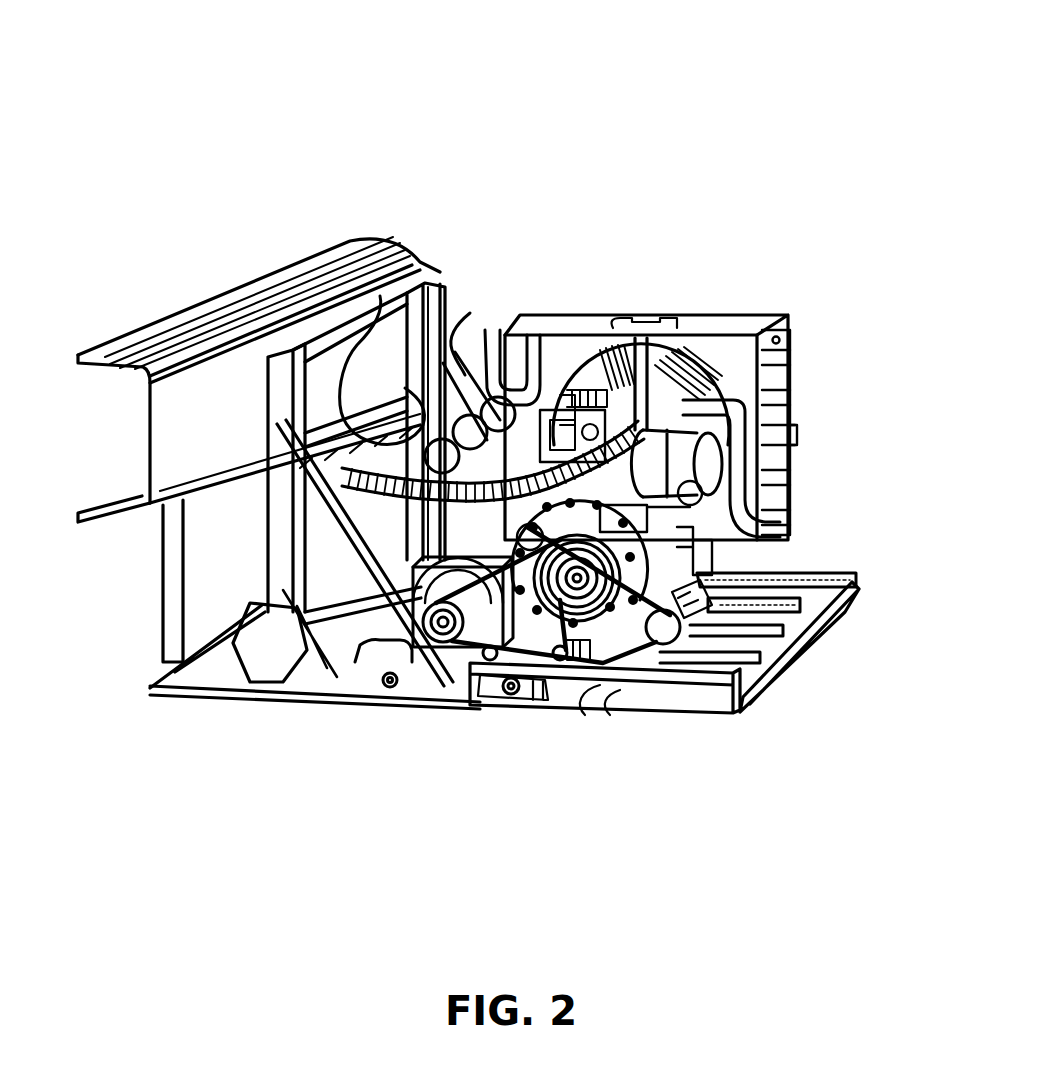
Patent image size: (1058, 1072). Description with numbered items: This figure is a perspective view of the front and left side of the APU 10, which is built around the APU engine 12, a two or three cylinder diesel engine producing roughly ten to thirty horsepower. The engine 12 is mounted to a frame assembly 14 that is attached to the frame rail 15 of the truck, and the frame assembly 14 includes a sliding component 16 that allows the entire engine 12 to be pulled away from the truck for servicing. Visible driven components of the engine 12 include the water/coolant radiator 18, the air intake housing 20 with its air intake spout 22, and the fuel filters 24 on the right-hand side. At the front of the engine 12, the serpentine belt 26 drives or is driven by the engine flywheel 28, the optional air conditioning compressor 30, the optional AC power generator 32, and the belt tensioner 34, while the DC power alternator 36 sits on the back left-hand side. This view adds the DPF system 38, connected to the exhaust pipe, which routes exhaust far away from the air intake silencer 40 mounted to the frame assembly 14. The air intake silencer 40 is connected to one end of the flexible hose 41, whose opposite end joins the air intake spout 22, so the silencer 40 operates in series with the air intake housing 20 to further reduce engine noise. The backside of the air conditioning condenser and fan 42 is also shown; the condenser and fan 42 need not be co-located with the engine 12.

The APU 10 is at (495, 172).
The APU engine 12 is at (652, 320).
The frame assembly 14 is at (440, 282).
The frame rail 15 is at (280, 278).
The sliding component 16 is at (822, 630).
The water/coolant radiator 18 is at (792, 316).
The air intake housing 20 is at (798, 436).
The air intake spout 22 is at (695, 398).
The fuel filters 24 is at (855, 580).
The serpentine belt 26 is at (640, 673).
The engine flywheel 28 is at (563, 705).
The air conditioning compressor 30 is at (733, 635).
The AC power generator 32 is at (367, 688).
The belt tensioner 34 is at (503, 700).
The DC power alternator 36 is at (533, 392).
The DPF system 38 is at (492, 330).
The air intake silencer 40 is at (300, 622).
The flexible hose 41 is at (380, 296).
The air conditioning condenser and fan 42 is at (165, 622).